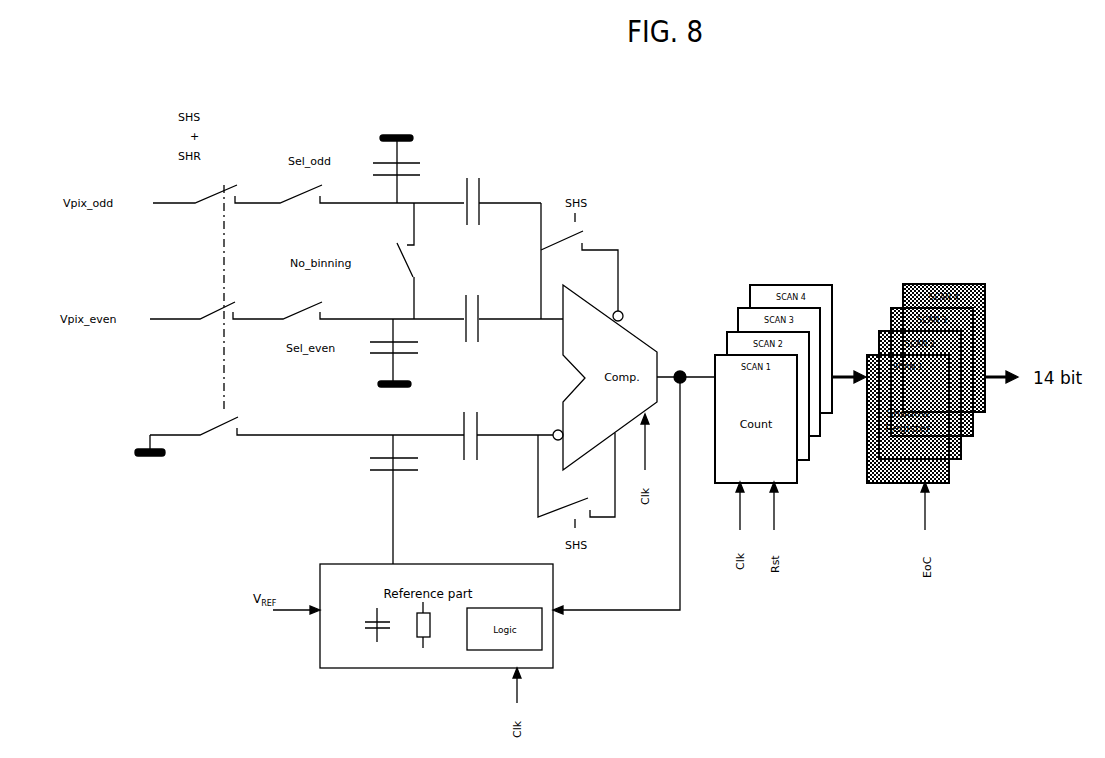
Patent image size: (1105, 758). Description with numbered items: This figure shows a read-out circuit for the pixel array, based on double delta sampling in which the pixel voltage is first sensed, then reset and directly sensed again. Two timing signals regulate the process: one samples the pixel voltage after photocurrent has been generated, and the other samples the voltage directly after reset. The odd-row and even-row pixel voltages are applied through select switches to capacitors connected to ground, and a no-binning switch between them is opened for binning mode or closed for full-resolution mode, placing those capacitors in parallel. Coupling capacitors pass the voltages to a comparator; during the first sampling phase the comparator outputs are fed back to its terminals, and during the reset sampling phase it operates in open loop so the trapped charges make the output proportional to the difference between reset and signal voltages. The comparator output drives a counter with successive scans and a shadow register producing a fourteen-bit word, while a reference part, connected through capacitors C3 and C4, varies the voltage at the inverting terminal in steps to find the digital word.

The reference capacitor C3 is at (394, 499).
The coupling capacitor C4 is at (475, 447).